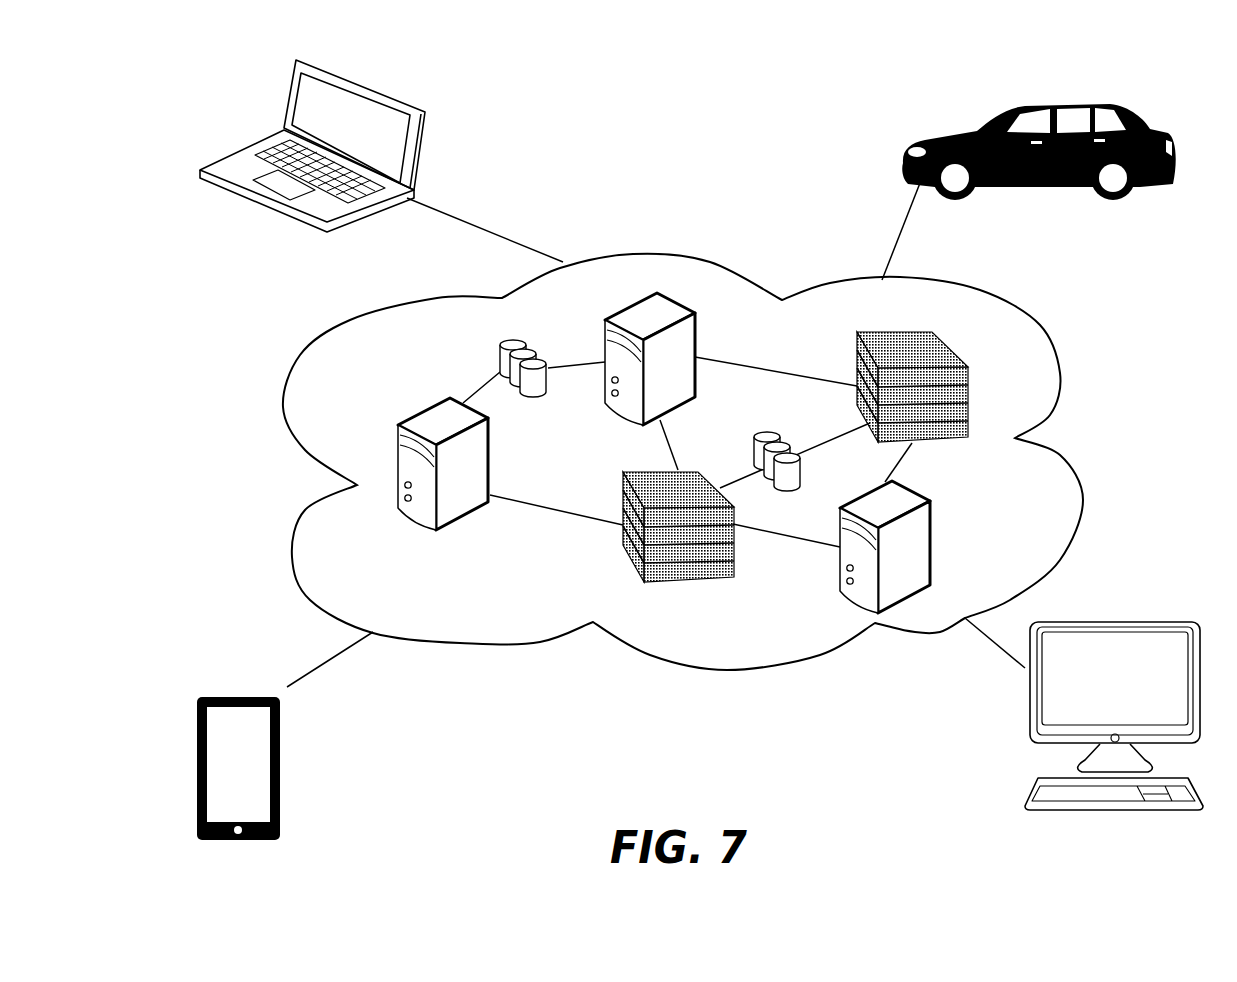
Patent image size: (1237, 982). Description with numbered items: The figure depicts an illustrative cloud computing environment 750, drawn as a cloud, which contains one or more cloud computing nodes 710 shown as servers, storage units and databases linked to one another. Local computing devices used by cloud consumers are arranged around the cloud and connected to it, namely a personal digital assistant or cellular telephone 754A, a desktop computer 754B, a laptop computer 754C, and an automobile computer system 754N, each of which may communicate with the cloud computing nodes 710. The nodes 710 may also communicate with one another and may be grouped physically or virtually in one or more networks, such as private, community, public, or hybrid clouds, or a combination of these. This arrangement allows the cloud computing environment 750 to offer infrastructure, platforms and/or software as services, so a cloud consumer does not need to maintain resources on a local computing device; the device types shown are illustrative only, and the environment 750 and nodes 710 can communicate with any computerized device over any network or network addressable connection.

The cloud computing environment 750 is at (320, 340).
The cloud computing nodes 710 is at (1048, 483).
The personal digital assistant (PDA) or cellular telephone 754A is at (238, 705).
The desktop computer 754B is at (1158, 620).
The laptop computer 754C is at (407, 105).
The automobile computer system 754N is at (1037, 108).